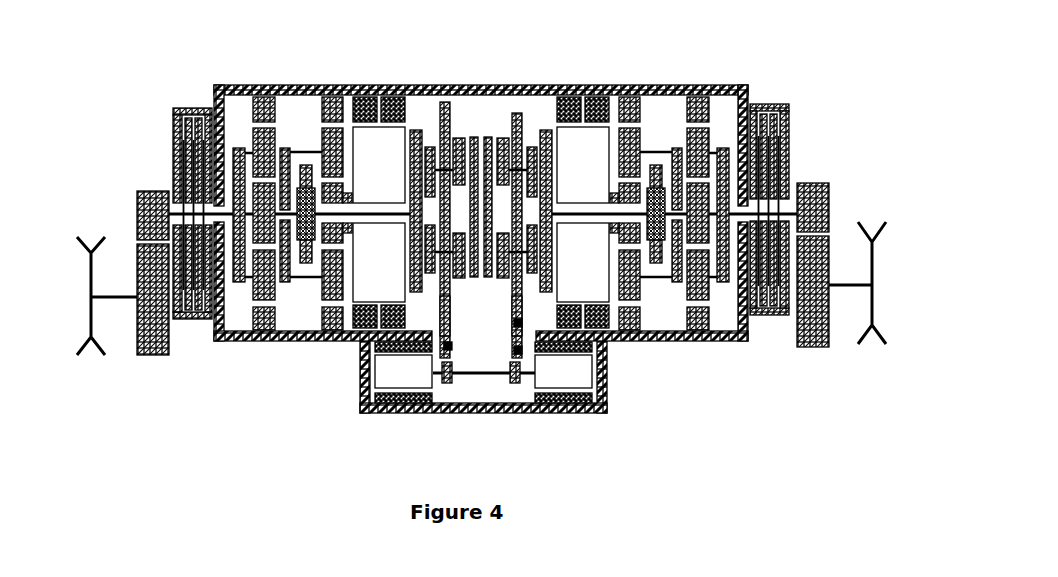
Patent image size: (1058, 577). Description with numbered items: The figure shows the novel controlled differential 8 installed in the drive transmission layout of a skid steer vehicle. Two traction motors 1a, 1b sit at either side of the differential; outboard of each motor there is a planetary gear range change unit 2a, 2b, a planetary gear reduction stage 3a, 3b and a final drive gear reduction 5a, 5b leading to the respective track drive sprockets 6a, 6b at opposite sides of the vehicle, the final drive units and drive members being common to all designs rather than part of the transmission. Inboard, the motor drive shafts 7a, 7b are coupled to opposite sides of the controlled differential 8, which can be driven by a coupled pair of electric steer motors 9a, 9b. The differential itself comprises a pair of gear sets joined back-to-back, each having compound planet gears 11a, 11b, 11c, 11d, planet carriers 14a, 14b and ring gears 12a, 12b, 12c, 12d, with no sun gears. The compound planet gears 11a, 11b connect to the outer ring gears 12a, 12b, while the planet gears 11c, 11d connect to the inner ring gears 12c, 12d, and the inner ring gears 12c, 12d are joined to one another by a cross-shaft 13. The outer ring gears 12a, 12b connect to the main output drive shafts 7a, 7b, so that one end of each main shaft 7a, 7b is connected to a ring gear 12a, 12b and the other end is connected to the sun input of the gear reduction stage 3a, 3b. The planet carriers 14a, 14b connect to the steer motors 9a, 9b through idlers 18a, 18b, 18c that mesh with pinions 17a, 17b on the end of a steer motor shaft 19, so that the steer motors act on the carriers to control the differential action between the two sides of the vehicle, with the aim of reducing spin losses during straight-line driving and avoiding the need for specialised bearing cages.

The traction motor 1a is at (380, 145).
The traction motor 1b is at (582, 150).
The planetary gear range change unit 2a is at (330, 160).
The planetary gear range change unit 2b is at (635, 158).
The planetary gear reduction stage 3a is at (263, 184).
The planetary gear reduction stage 3b is at (697, 207).
The final drive gear reduction 5a is at (152, 206).
The final drive gear reduction 5b is at (812, 208).
The track drive sprocket 6a is at (93, 347).
The track drive sprocket 6b is at (872, 345).
The motor drive shaft 7a is at (357, 213).
The motor drive shaft 7b is at (593, 209).
The controlled differential 8 is at (490, 98).
The electric steer motor 9a is at (402, 375).
The electric steer motor 9b is at (568, 375).
The compound planet gear 11a is at (432, 178).
The compound planet gear 11b is at (532, 170).
The compound planet gear 11c is at (458, 168).
The compound planet gear 11d is at (502, 167).
The outer ring gear 12a is at (413, 237).
The outer ring gear 12b is at (548, 238).
The inner ring gear 12c is at (473, 275).
The inner ring gear 12d is at (490, 273).
The cross-shaft 13 is at (483, 208).
The planet carrier 14a is at (443, 307).
The planet carrier 14b is at (517, 268).
The pinion 17a is at (448, 378).
The pinion 17b is at (520, 380).
The idler 18a is at (448, 345).
The idler 18b is at (520, 323).
The idler 18c is at (520, 350).
The steer motor shaft 19 is at (483, 373).